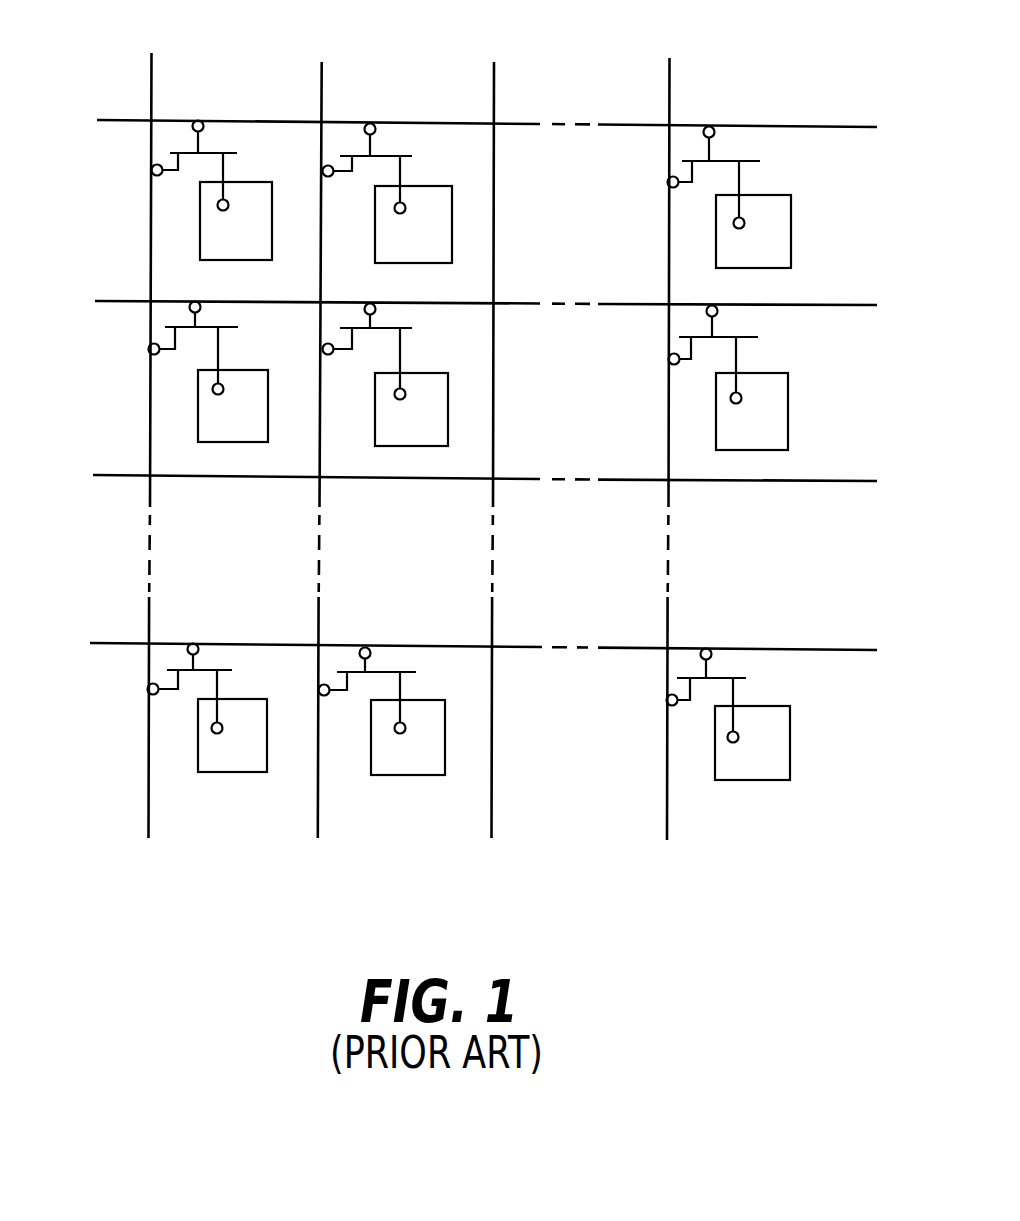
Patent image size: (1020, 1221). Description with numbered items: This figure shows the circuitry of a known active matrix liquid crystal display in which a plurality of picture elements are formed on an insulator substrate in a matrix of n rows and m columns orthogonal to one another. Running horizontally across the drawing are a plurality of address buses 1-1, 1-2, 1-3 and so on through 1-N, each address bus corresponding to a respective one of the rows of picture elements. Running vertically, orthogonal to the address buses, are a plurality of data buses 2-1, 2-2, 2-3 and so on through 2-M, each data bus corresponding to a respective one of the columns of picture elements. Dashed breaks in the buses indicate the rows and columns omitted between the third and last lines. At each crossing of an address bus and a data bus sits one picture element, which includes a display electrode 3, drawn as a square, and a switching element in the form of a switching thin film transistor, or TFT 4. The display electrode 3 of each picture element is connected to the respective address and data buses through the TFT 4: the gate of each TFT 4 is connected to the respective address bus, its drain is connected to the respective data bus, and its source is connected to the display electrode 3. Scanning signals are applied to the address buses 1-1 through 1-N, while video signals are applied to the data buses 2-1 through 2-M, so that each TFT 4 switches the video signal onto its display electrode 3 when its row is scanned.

The address bus 1-1 is at (464, 119).
The address bus 1-2 is at (460, 299).
The address bus 1-3 is at (460, 476).
The address bus 1-N is at (460, 648).
The data bus 2-1 is at (152, 428).
The data bus 2-2 is at (319, 428).
The data bus 2-3 is at (499, 432).
The data bus 2-M is at (674, 434).
The display electrode 3 is at (778, 233).
The switching thin film transistor (TFT) 4 is at (748, 165).